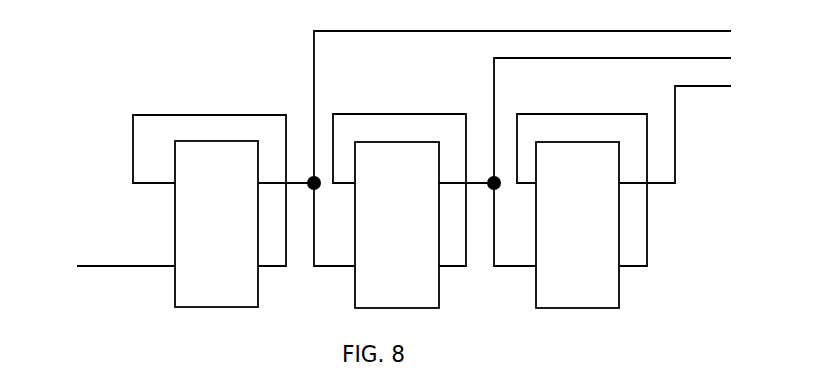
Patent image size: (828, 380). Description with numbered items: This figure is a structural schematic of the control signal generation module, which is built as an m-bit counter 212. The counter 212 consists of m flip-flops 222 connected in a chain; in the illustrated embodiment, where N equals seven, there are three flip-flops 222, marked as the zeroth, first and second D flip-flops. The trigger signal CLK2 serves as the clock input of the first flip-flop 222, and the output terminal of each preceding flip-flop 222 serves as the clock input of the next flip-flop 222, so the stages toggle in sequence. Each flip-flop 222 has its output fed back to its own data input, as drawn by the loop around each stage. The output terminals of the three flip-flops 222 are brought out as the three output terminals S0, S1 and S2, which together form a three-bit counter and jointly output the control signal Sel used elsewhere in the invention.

The m-bit counter 212 is at (83, 168).
The flip-flop 222 is at (258, 291).
The output terminal S0 is at (522, 97).
The output terminal S1 is at (612, 111).
The output terminal S2 is at (675, 125).
The trigger signal CLK2 is at (122, 254).